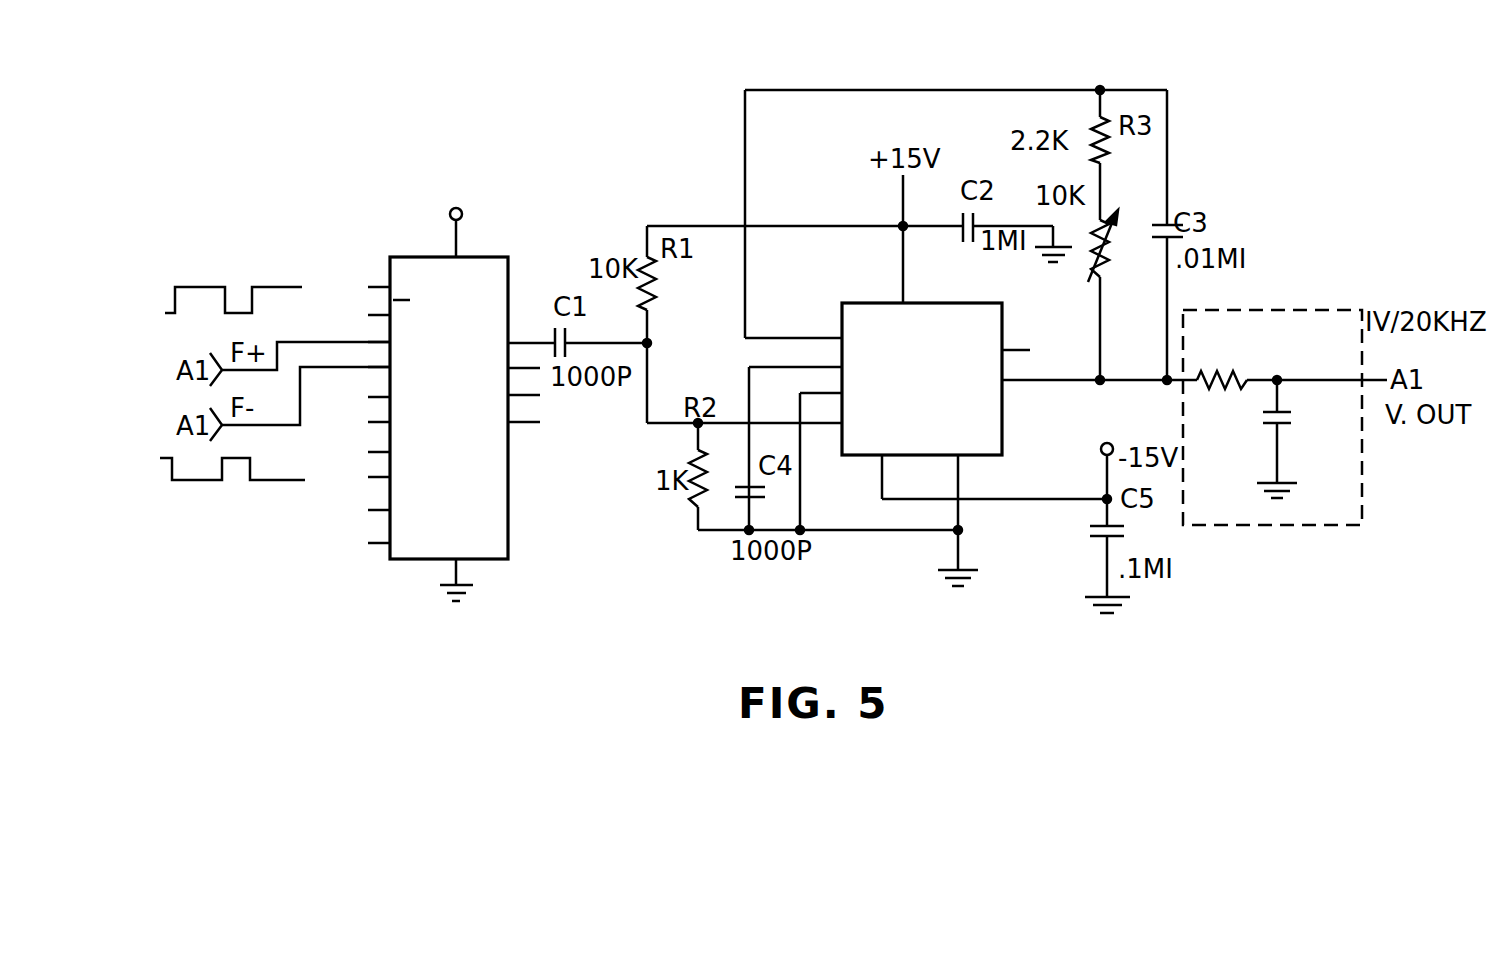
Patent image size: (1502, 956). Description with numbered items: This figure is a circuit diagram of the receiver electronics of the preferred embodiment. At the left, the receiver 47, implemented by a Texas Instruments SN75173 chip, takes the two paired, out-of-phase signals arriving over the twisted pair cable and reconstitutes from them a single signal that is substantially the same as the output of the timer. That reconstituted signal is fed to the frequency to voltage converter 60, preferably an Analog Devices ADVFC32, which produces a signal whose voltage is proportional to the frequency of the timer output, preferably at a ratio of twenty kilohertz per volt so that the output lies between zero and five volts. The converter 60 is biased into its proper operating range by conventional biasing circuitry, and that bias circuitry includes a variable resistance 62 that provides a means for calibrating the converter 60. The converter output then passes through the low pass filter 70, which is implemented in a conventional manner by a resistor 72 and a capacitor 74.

The RS-422 receiver 47 is at (398, 255).
The frequency to voltage converter 60 is at (985, 455).
The variable resistance 62 is at (1105, 258).
The low pass filter 70 is at (1310, 307).
The resistor 72 is at (1238, 373).
The capacitor 74 is at (1280, 425).